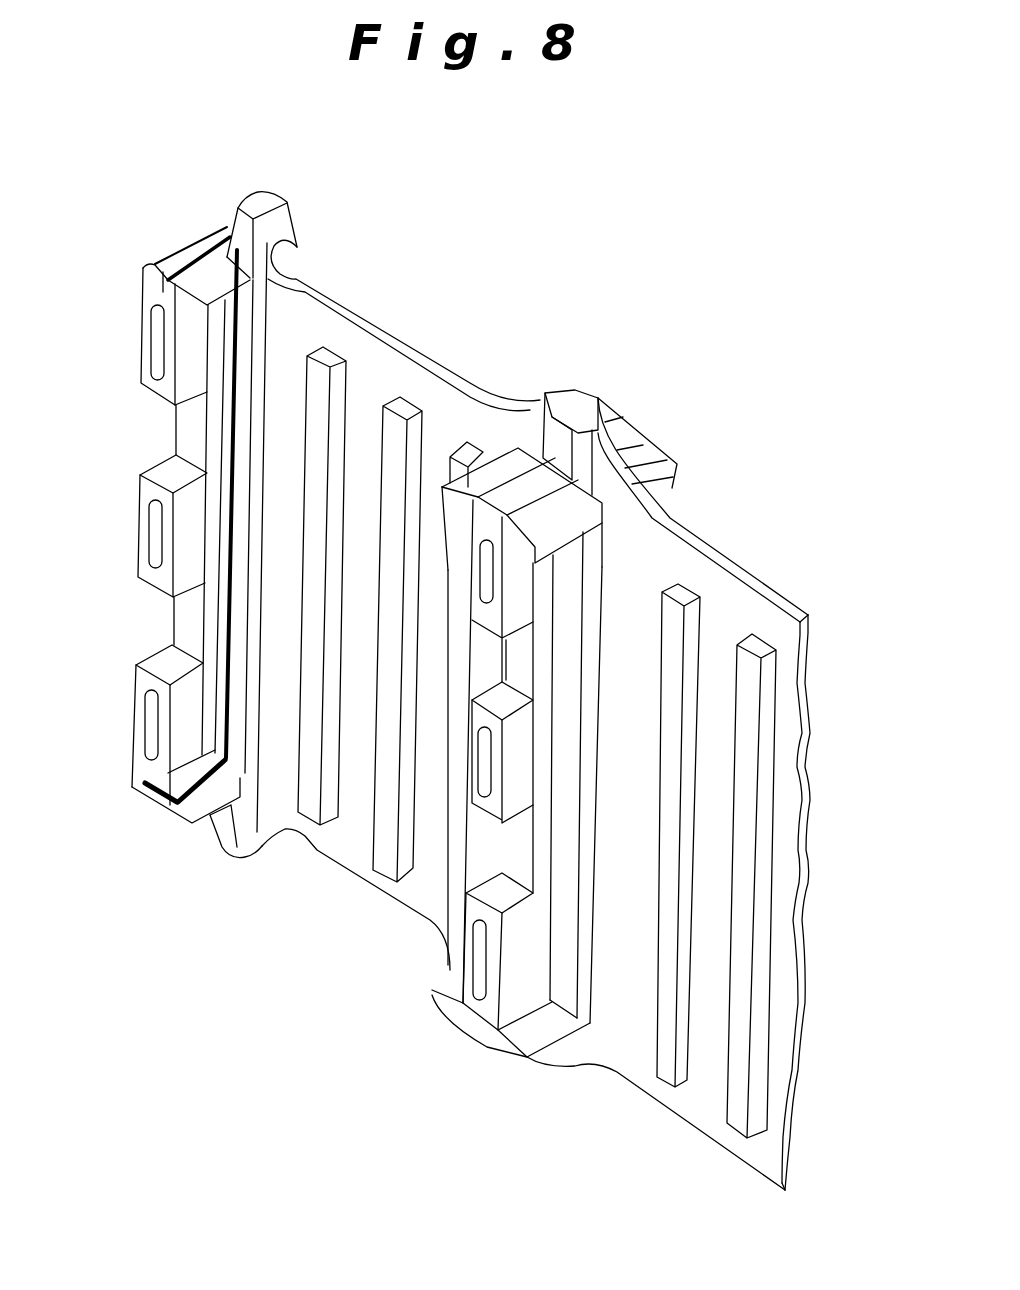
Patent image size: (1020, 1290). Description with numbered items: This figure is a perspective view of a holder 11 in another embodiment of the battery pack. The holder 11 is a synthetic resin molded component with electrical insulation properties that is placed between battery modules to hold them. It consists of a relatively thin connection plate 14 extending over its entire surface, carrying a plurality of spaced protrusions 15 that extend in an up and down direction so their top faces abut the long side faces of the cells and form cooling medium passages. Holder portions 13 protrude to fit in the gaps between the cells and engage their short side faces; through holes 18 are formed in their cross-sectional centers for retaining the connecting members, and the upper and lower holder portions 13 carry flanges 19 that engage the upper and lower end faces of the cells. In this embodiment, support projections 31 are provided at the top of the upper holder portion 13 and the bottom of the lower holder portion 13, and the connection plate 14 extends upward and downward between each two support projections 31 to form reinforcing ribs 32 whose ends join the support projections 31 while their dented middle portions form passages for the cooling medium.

The holder 11 is at (471, 320).
The holder portions 13 is at (142, 352).
The connection plate 14 is at (785, 880).
The protrusions 15 is at (743, 1017).
The through holes 18 is at (158, 333).
The flanges 19 is at (220, 285).
The support projections 31 is at (262, 207).
The reinforcing ribs 32 is at (378, 357).